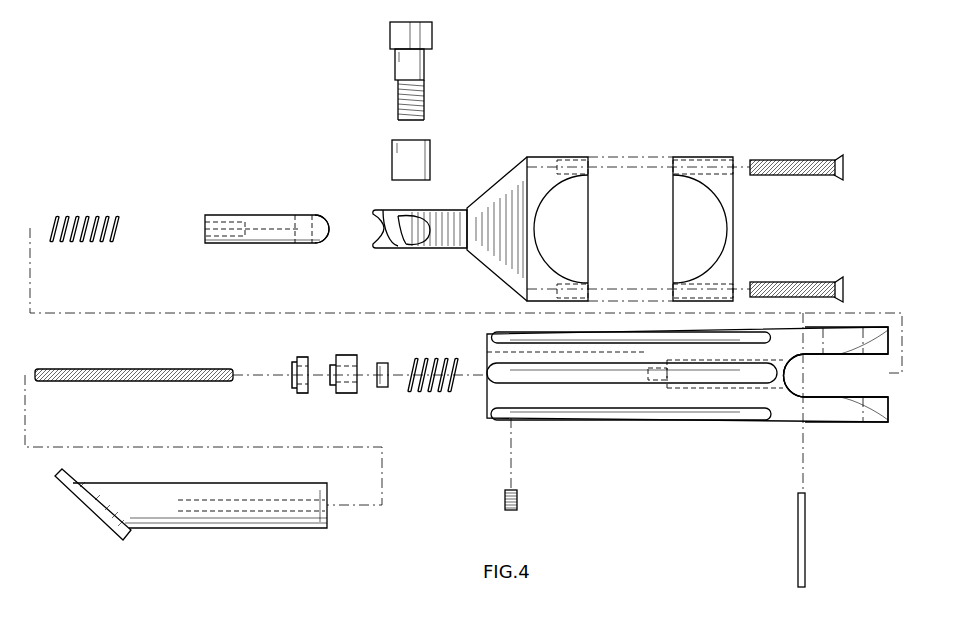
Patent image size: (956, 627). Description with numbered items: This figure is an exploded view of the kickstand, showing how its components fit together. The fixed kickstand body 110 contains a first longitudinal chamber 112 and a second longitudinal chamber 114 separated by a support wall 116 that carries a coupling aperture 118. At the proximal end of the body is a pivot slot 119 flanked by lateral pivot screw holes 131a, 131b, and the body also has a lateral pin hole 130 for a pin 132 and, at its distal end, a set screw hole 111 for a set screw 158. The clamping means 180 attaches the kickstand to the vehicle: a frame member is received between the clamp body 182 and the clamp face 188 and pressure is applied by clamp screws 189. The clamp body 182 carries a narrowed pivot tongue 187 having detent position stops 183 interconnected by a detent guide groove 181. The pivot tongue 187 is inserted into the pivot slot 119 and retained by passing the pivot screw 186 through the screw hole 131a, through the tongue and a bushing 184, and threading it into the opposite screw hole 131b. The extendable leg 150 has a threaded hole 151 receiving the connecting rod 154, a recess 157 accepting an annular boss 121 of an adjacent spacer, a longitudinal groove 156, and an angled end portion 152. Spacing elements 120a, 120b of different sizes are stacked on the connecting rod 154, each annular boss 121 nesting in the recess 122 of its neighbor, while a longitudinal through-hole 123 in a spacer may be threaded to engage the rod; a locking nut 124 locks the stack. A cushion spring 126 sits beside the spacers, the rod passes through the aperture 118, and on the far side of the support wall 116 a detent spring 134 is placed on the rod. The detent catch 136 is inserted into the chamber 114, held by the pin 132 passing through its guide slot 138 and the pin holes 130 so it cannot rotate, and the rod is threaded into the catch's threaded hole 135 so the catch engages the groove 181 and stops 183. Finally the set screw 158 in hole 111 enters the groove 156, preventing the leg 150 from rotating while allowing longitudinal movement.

The fixed kickstand body 110 is at (670, 400).
The set screw hole 111 is at (523, 400).
The first longitudinal chamber 112 is at (590, 400).
The second longitudinal chamber 114 is at (712, 398).
The support wall 116 is at (648, 388).
The coupling aperture 118 is at (660, 388).
The pivot slot 119 is at (868, 397).
The spacing element 120a is at (303, 357).
The spacing element 120b is at (350, 355).
The annular boss 121 is at (330, 390).
The recess 122 is at (295, 365).
The longitudinal through-hole 123 is at (290, 380).
The locking nut 124 is at (384, 388).
The cushion spring 126 is at (432, 393).
The lateral pin hole 130 is at (812, 336).
The pivot screw hole 131a is at (866, 340).
The pivot screw hole 131b is at (857, 410).
The pin 132 is at (806, 500).
The detent spring 134 is at (108, 215).
The threaded hole 135 is at (212, 219).
The detent catch 136 is at (255, 216).
The guide slot 138 is at (317, 216).
The extendable leg 150 is at (285, 530).
The threaded hole 151 is at (232, 500).
The angled arm 152 is at (133, 540).
The connecting rod 154 is at (145, 369).
The groove 156 is at (220, 528).
The recess 157 is at (327, 510).
The set screw 158 is at (519, 500).
The clamping means 180 is at (650, 121).
The detent guide groove 181 is at (373, 240).
The clamp body 182 is at (544, 157).
The detent position stop 183 is at (408, 245).
The bushing 184 is at (432, 152).
The pivot screw 186 is at (432, 38).
The pivot tongue 187 is at (436, 250).
The clamp face 188 is at (733, 213).
The clamp screw 189 is at (770, 160).